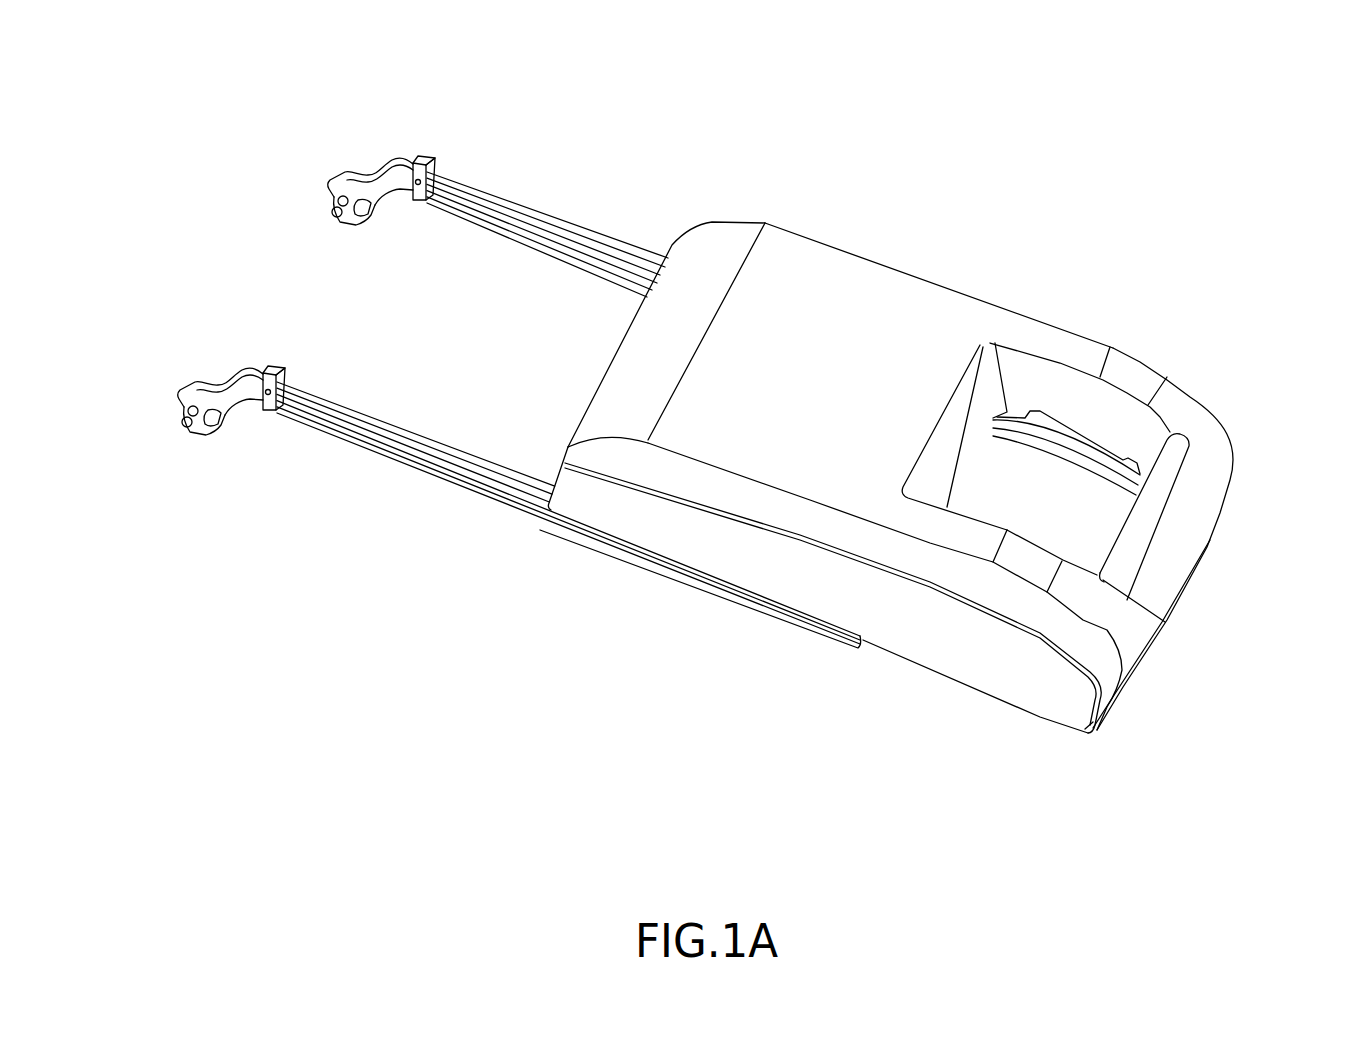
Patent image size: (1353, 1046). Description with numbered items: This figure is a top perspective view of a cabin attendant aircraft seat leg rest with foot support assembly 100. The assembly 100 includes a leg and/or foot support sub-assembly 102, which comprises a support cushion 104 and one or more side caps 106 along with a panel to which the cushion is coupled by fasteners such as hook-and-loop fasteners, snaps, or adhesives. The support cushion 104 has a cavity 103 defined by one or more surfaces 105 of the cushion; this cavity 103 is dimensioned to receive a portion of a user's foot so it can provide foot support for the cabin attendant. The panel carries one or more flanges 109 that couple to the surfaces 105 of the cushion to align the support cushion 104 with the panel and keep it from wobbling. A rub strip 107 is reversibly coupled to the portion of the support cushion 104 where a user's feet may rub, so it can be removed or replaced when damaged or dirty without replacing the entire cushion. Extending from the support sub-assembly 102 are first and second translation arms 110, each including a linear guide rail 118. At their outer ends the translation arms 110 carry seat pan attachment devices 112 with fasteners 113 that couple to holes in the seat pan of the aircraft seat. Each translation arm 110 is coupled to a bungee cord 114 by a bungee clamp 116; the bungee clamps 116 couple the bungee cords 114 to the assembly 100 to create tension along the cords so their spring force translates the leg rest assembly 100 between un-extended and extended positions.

The leg rest with foot support assembly 100 is at (166, 74).
The leg and/or foot support sub-assembly 102 is at (955, 253).
The cavity 103 is at (1050, 502).
The support cushion 104 is at (1107, 662).
The surfaces of the support cushion 105 is at (970, 393).
The side cap 106 is at (1087, 735).
The rub strip 107 is at (1196, 521).
The flange 109 is at (1177, 430).
The translation arm 110 is at (566, 196).
The seat pan attachment device 112 is at (388, 141).
The fastener 113 is at (335, 222).
The bungee cord 114 is at (398, 446).
The bungee clamp 116 is at (418, 204).
The linear guide rail 118 is at (520, 248).